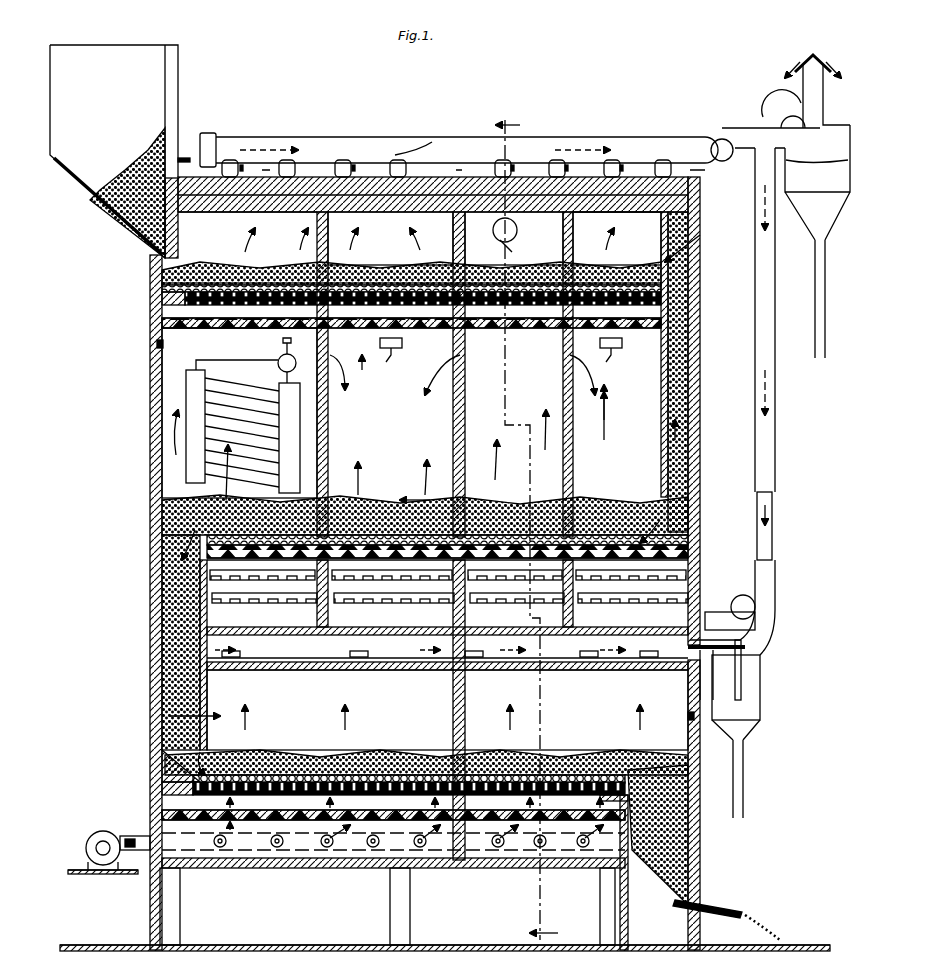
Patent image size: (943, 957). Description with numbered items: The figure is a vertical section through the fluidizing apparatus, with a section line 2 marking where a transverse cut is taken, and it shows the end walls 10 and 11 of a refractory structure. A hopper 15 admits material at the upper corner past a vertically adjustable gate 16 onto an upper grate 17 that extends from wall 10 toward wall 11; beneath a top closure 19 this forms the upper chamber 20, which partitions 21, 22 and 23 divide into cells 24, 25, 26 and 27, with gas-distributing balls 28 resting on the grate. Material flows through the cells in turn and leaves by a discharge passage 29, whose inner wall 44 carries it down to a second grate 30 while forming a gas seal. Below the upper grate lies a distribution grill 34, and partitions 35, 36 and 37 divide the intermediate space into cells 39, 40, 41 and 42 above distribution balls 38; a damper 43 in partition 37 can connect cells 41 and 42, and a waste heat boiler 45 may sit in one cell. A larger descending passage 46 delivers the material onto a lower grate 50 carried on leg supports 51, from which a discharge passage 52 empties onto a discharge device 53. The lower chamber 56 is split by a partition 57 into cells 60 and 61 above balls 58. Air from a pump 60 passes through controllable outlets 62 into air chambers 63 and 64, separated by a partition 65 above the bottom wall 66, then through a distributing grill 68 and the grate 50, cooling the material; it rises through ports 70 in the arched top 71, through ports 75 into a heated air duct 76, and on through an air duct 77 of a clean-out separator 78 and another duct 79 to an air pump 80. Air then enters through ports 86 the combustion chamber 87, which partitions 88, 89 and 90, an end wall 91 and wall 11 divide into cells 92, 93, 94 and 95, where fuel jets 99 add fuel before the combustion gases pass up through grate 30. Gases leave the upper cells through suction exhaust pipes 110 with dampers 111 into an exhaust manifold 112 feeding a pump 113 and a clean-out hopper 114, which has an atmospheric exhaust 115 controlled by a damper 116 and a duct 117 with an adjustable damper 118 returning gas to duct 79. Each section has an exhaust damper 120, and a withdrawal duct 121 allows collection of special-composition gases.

The section line 2 is at (527, 525).
The end wall 10 is at (150, 585).
The end wall 11 is at (700, 420).
The hopper 15 is at (123, 75).
The vertically adjustable gate 16 is at (185, 156).
The upper grate 17 is at (162, 296).
The top closure 19 is at (634, 225).
The upper chamber 20 is at (700, 236).
The partition 21 is at (317, 240).
The partition 22 is at (453, 237).
The partition 23 is at (563, 237).
The cell 24 is at (270, 182).
The cell 25 is at (372, 225).
The cell 26 is at (533, 225).
The cell 27 is at (650, 210).
The balls 28 is at (390, 282).
The discharge passage 29 is at (690, 338).
The second grate 30 is at (690, 552).
The distribution grill 34 is at (162, 321).
The partition 35 is at (563, 343).
The partition 36 is at (453, 342).
The partition 37 is at (328, 343).
The distribution balls 38 is at (412, 535).
The cell 39 is at (668, 370).
The cell 40 is at (545, 395).
The cell 41 is at (432, 412).
The cell 42 is at (182, 354).
The damper 43 is at (467, 397).
The inner wall 44 is at (688, 418).
The waste heat boiler 45 is at (186, 412).
The discharge passage 46 is at (162, 637).
The lower grate 50 is at (162, 790).
The leg supports 51 is at (160, 917).
The descending discharge passage 52 is at (680, 852).
The discharge device 53 is at (712, 905).
The lower chamber 56 is at (162, 725).
The partition 57 is at (453, 711).
The distribution balls 58 is at (300, 775).
The cell 60 is at (105, 832).
The cell 61 is at (592, 650).
The outlets 62 is at (220, 848).
The air chamber 63 is at (360, 852).
The air chamber 64 is at (485, 845).
The partition 65 is at (455, 850).
The bottom wall 66 is at (270, 868).
The distributing grill 68 is at (268, 820).
The ports 70 is at (235, 670).
The arched top 71 is at (375, 672).
The ports 75 is at (232, 651).
The heated air duct 76 is at (402, 660).
The air duct 77 is at (745, 680).
The clean-out separator 78 is at (762, 699).
The air duct 79 is at (775, 620).
The air pump 80 is at (748, 592).
The ports 86 is at (305, 602).
The combustion chamber 87 is at (200, 588).
The partition 88 is at (573, 585).
The partition 89 is at (465, 585).
The partition 90 is at (328, 585).
The end wall 91 is at (207, 615).
The combustion chamber cell 92 is at (688, 584).
The combustion chamber cell 93 is at (563, 612).
The combustion chamber cell 94 is at (430, 648).
The combustion chamber cell 95 is at (200, 648).
The ports 99 is at (290, 574).
The suction exhaust pipes 110 is at (232, 158).
The damper 111 is at (262, 170).
The exhaust manifold 112 is at (392, 138).
The pump 113 is at (728, 138).
The clean-out hopper 114 is at (822, 228).
The atmospheric exhaust 115 is at (823, 96).
The damper 116 is at (808, 56).
The duct 117 is at (768, 110).
The adjustable damper 118 is at (772, 547).
The exhaust damper 120 is at (156, 350).
The withdrawal duct 121 is at (514, 244).